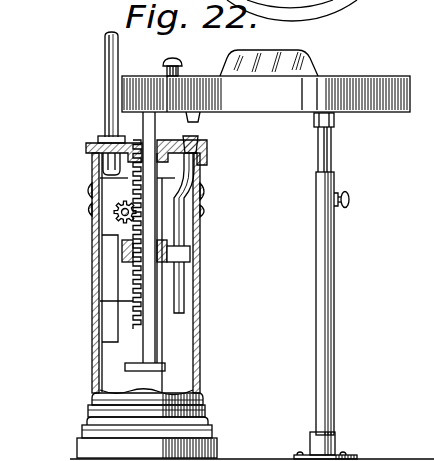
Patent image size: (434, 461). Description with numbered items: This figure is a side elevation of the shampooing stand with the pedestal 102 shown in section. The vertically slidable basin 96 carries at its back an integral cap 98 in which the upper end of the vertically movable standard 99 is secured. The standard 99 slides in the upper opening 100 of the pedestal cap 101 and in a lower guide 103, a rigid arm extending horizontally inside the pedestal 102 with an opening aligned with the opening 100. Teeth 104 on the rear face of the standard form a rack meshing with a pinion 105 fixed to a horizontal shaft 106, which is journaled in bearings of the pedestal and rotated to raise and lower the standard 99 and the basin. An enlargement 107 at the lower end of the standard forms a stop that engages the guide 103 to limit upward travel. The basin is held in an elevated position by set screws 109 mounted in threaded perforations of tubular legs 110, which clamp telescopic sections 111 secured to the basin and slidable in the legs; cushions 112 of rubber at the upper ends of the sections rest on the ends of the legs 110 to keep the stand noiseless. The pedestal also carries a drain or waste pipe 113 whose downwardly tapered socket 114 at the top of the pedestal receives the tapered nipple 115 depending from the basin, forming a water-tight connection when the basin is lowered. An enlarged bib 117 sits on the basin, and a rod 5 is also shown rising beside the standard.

The rod 5 is at (107, 91).
The basin 96 is at (266, 94).
The cap 98 is at (147, 88).
The standard 99 is at (148, 341).
The upper opening 100 is at (167, 151).
The pedestal cap 101 is at (202, 169).
The pedestal 102 is at (196, 382).
The lower guide 103 is at (165, 265).
The teeth 104 is at (99, 318).
The pinion 105 is at (122, 234).
The horizontal shaft 106 is at (110, 216).
The enlargement 107 is at (167, 367).
The set screws 109 is at (350, 202).
The tubular legs 110 is at (334, 298).
The telescopic sections 111 is at (331, 151).
The cushions 112 is at (334, 117).
The drain pipe 113 is at (180, 296).
The socket 114 is at (199, 146).
The tapered nipple 115 is at (200, 118).
The bib 117 is at (311, 57).